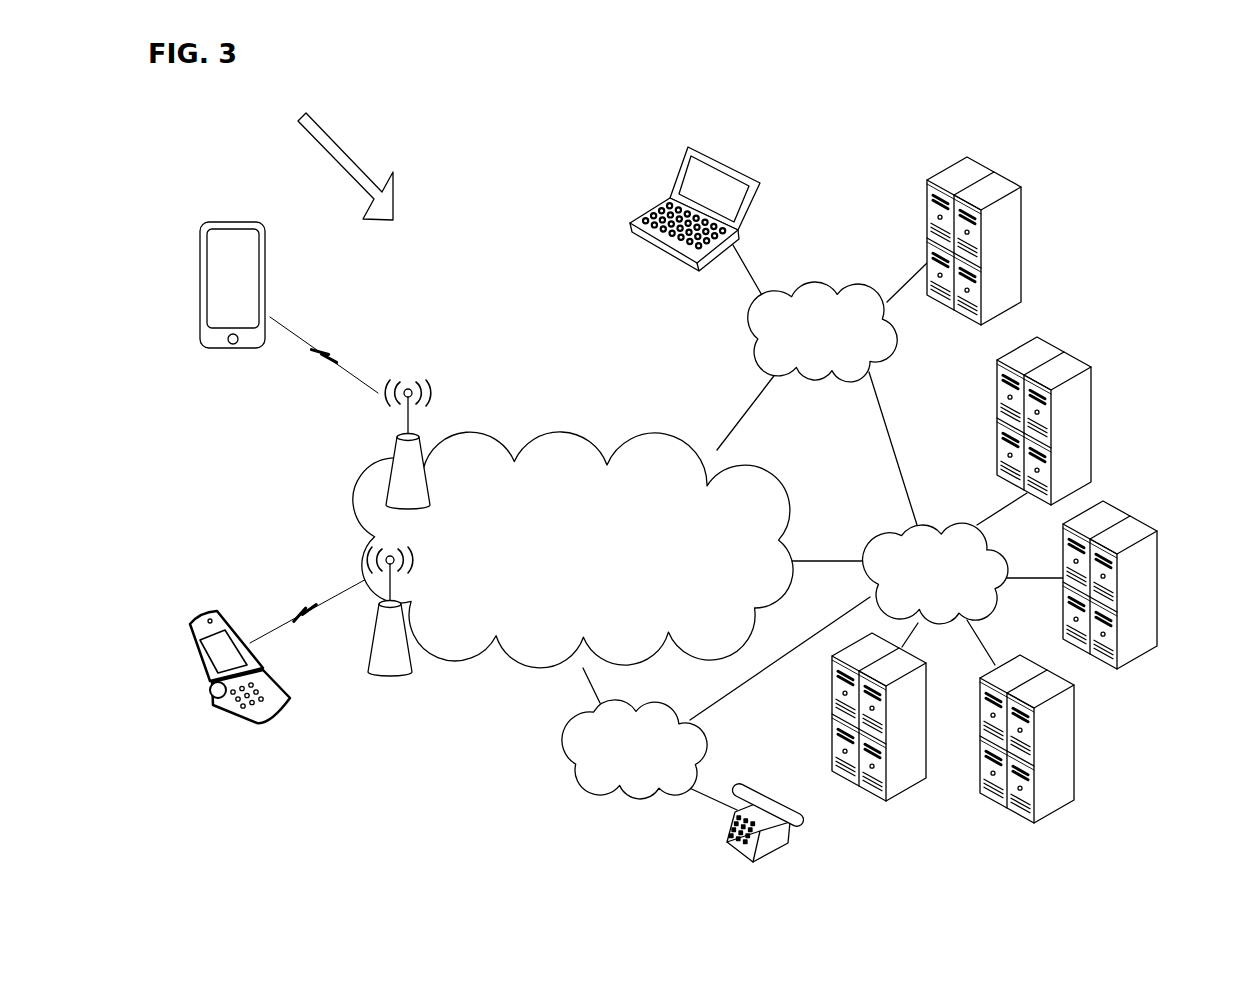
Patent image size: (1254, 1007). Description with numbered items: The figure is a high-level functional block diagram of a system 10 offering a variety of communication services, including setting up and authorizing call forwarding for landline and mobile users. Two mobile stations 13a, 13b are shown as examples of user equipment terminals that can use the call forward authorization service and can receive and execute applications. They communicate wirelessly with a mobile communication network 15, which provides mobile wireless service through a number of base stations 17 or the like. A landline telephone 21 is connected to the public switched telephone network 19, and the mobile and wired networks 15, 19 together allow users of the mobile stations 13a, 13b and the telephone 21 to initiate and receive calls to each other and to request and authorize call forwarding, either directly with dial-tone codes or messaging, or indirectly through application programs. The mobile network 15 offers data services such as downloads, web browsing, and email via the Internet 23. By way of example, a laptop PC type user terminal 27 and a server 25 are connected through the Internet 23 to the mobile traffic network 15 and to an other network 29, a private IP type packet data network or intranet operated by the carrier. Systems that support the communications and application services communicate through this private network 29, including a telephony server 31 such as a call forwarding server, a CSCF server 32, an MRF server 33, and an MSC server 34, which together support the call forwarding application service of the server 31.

The system 10 is at (335, 158).
The mobile station 13a is at (183, 642).
The mobile station 13b is at (200, 263).
The mobile communication network 15 is at (477, 435).
The base station 17 is at (393, 458).
The public switched telephone network 19 is at (705, 750).
The landline telephone 21 is at (725, 843).
The Internet 23 is at (823, 378).
The server 25 is at (927, 255).
The laptop PC type user terminal 27 is at (647, 257).
The private IP type packet data network 29 is at (898, 530).
The telephony server 31 is at (1077, 757).
The CSCF server 32 is at (1160, 543).
The MRF server 33 is at (1093, 423).
The MSC server 34 is at (873, 803).